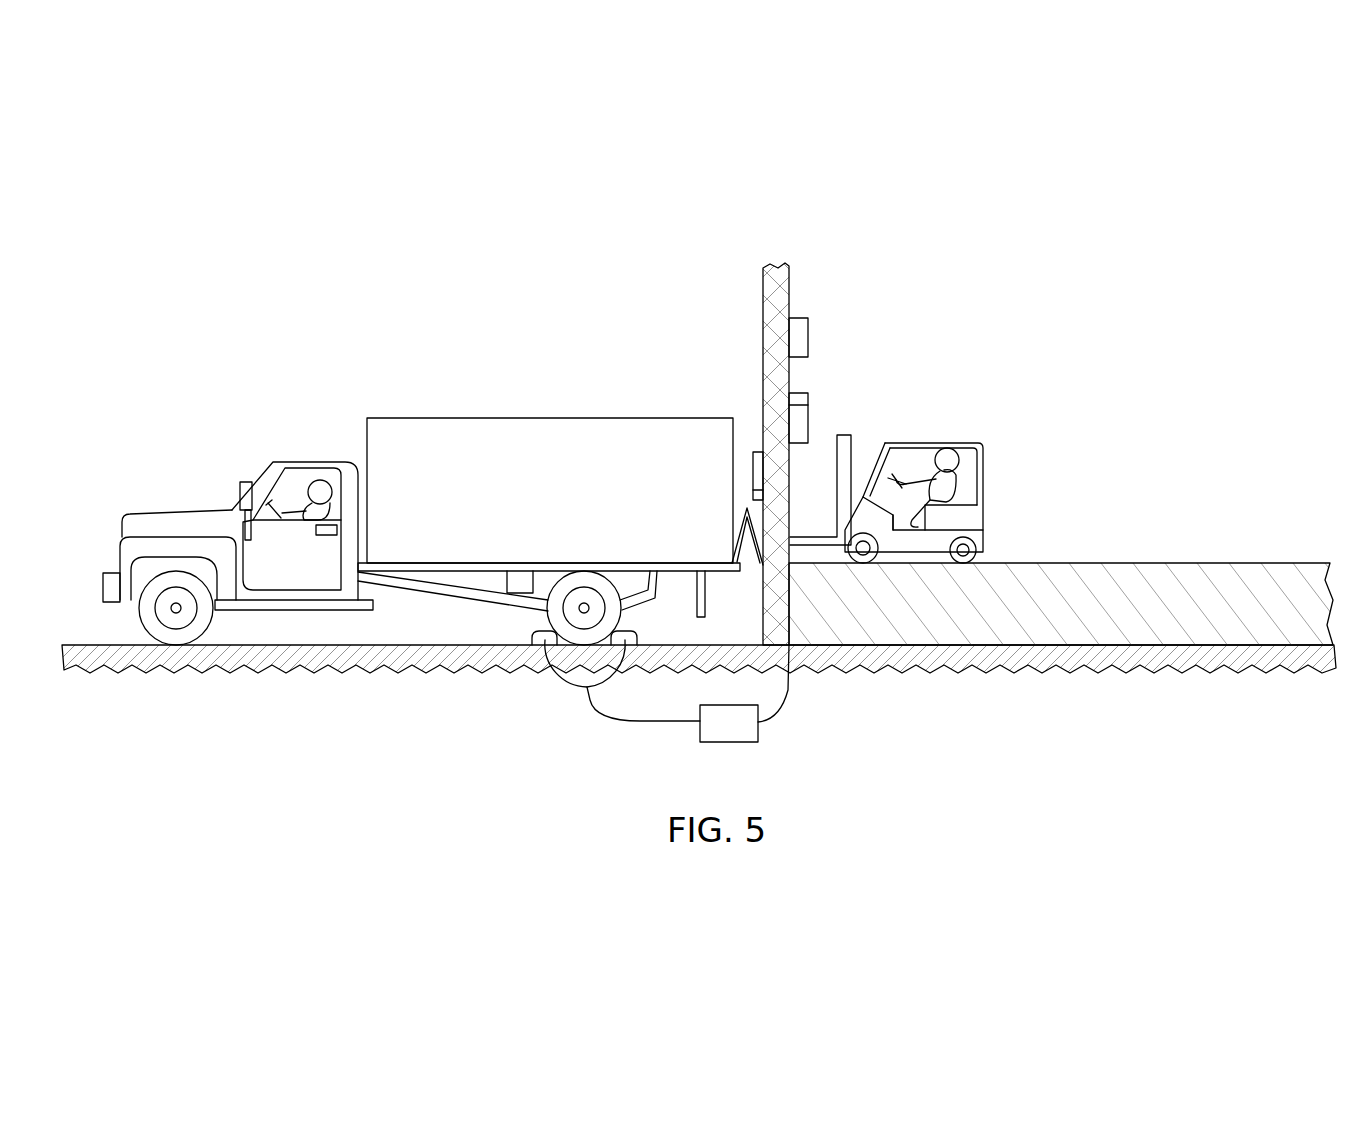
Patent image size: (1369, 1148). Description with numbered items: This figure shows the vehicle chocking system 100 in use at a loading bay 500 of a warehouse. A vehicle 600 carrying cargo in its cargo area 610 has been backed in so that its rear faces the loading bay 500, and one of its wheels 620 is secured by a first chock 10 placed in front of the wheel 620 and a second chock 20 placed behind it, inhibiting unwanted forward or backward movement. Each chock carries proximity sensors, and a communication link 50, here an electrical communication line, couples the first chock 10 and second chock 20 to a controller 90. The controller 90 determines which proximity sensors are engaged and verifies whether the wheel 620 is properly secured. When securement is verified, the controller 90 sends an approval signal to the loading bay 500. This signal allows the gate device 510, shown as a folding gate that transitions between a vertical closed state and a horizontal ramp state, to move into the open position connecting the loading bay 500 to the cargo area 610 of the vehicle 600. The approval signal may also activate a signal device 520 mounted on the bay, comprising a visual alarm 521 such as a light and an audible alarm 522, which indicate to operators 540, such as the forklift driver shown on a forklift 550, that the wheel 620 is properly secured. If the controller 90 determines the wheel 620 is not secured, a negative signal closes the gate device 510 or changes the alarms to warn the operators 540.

The first chock 10 is at (535, 634).
The second chock 20 is at (640, 632).
The communication link 50 is at (635, 722).
The controller 90 is at (758, 733).
The vehicle chocking system 100 is at (545, 688).
The loading bay 500 is at (1130, 273).
The gate device 510 is at (740, 505).
The signal device 520 is at (850, 283).
The visual alarm 521 is at (810, 410).
The audible alarm 522 is at (810, 330).
The operators 540 is at (980, 462).
The forklift 550 is at (985, 520).
The vehicle 600 is at (421, 453).
The cargo area 610 is at (557, 418).
The wheel 620 is at (586, 571).